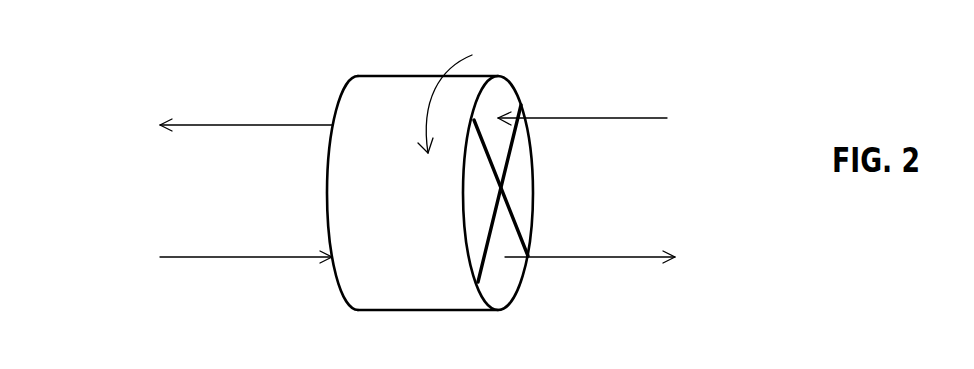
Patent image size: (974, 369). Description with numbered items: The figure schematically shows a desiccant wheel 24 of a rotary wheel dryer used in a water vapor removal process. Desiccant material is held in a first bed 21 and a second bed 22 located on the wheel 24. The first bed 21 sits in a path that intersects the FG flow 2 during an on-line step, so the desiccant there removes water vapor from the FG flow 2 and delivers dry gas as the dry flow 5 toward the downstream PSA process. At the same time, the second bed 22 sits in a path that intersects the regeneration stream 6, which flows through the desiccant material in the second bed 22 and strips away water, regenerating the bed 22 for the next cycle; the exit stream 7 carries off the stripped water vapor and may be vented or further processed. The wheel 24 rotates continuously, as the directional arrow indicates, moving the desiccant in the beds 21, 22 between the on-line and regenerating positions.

The FG flow 2 is at (237, 257).
The dry flow 5 is at (600, 257).
The regeneration stream 6 is at (594, 119).
The exit stream 7 is at (237, 126).
The first bed 21 is at (512, 283).
The second bed 22 is at (500, 96).
The desiccant wheel 24 is at (392, 90).